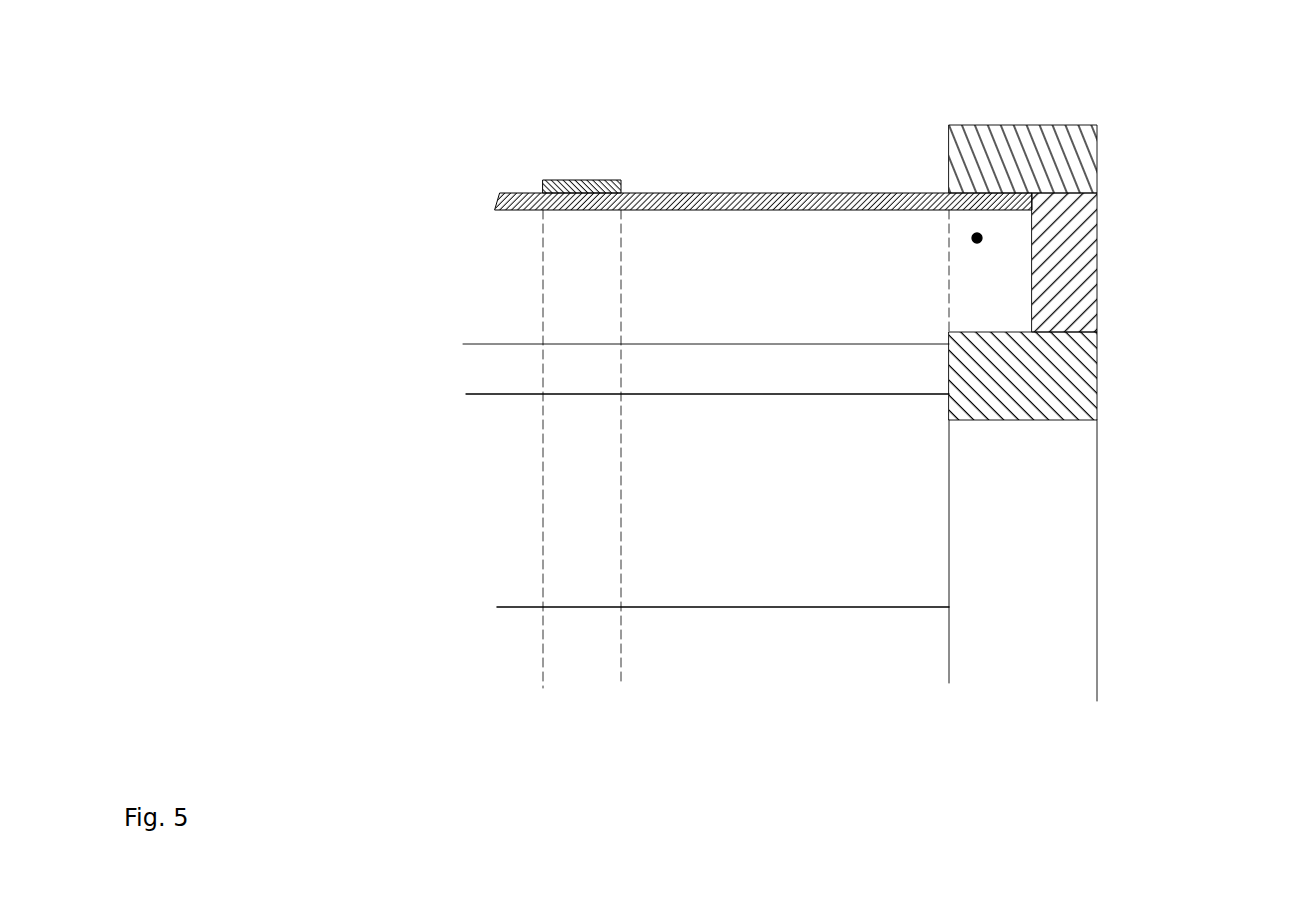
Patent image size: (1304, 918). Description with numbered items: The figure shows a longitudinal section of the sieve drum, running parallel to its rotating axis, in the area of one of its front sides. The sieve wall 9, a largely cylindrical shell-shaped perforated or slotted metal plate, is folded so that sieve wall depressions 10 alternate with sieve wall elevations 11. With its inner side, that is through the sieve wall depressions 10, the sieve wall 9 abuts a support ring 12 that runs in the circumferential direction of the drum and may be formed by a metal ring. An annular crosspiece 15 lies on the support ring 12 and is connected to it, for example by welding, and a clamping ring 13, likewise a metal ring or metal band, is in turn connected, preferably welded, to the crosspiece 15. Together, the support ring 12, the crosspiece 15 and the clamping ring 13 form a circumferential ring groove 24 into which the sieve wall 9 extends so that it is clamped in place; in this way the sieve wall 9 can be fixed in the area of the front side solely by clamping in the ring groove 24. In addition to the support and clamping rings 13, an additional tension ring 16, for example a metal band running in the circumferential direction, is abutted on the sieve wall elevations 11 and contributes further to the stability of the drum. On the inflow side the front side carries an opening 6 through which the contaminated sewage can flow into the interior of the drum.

The opening 6 is at (1145, 630).
The sieve wall 9 is at (510, 523).
The sieve wall depressions 10 is at (485, 343).
The sieve wall elevations 11 is at (500, 195).
The support ring 12 is at (1082, 502).
The clamping ring 13 is at (1075, 157).
The crosspiece 15 is at (1093, 268).
The tension rings 16 is at (618, 182).
The ring groove 24 is at (977, 238).